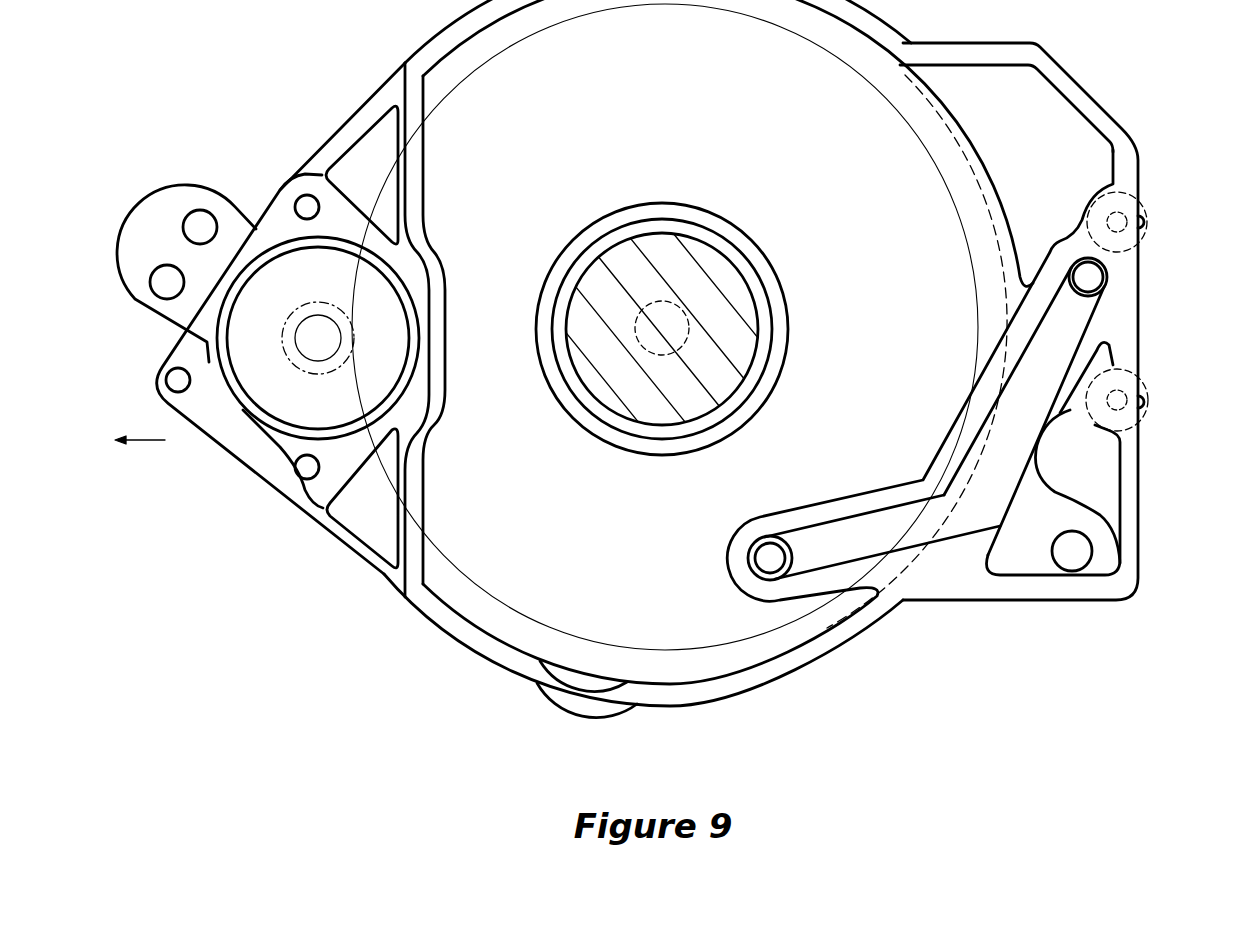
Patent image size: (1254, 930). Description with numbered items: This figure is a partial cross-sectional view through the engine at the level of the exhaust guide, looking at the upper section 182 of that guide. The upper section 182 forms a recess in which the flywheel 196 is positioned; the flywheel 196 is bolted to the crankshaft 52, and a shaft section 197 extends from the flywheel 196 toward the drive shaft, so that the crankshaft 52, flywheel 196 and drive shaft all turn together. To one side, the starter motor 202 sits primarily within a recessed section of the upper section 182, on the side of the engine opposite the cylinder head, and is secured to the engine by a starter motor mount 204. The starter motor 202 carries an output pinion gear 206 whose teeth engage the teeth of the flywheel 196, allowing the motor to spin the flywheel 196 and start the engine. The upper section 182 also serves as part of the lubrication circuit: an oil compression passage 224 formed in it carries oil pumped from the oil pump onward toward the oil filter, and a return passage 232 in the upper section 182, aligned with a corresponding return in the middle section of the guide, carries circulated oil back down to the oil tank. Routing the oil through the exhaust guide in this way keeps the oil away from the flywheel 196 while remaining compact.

The crankshaft 52 is at (657, 417).
The upper section 182 is at (853, 669).
The flywheel 196 is at (467, 627).
The shaft section 197 is at (642, 353).
The starter motor 202 is at (285, 241).
The starter motor mount 204 is at (240, 443).
The output pinion gear 206 is at (300, 378).
The oil compression passage 224 is at (1037, 377).
The return passage 232 is at (1073, 127).